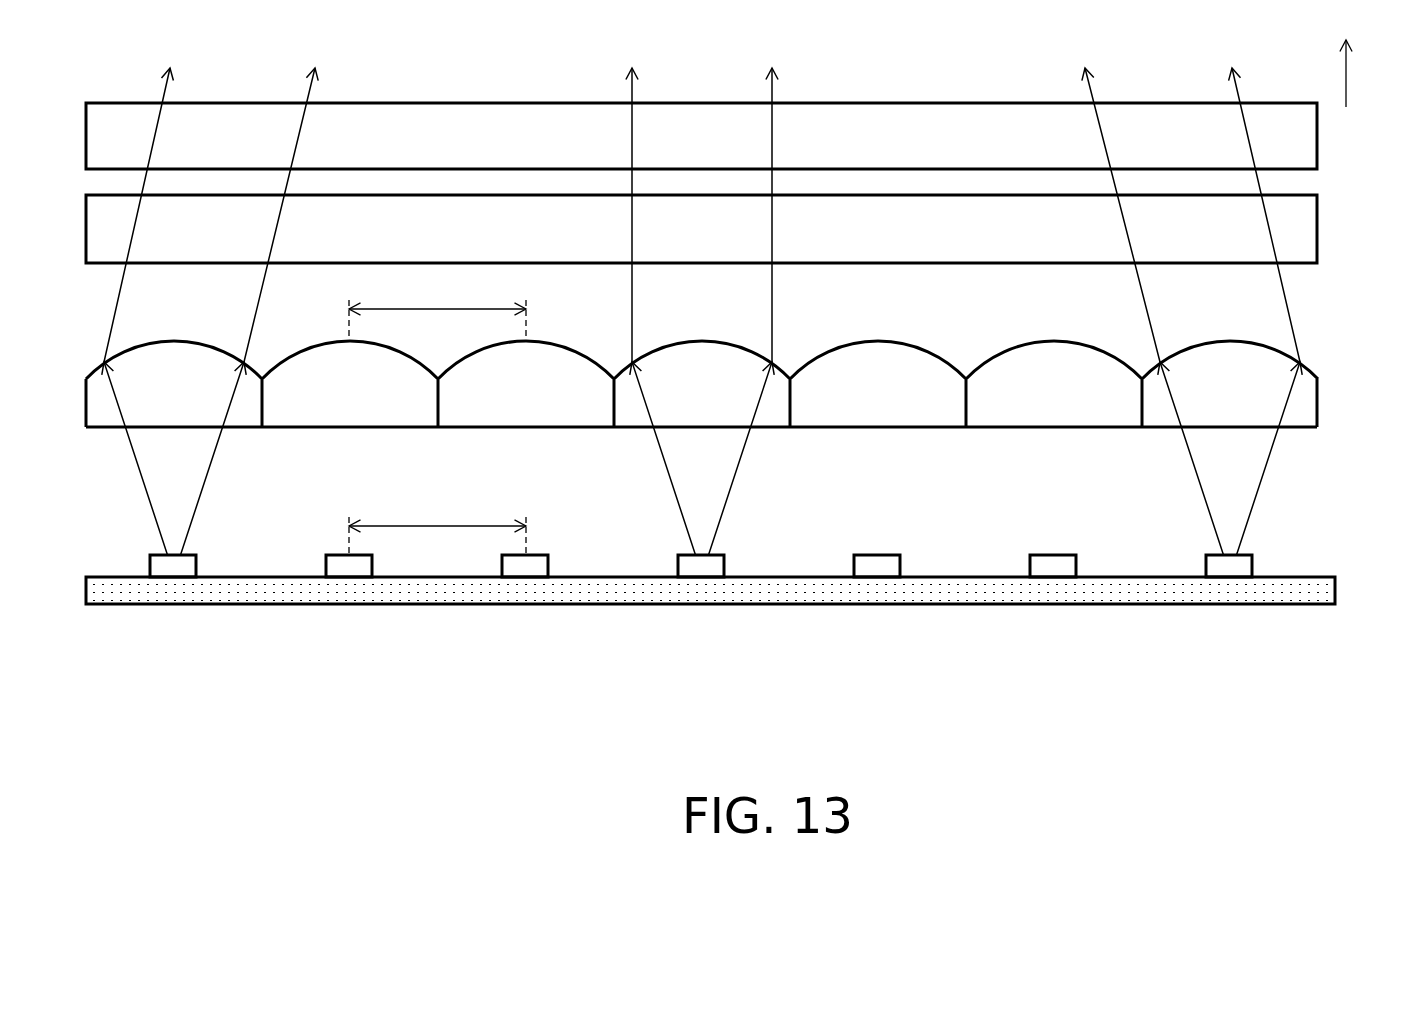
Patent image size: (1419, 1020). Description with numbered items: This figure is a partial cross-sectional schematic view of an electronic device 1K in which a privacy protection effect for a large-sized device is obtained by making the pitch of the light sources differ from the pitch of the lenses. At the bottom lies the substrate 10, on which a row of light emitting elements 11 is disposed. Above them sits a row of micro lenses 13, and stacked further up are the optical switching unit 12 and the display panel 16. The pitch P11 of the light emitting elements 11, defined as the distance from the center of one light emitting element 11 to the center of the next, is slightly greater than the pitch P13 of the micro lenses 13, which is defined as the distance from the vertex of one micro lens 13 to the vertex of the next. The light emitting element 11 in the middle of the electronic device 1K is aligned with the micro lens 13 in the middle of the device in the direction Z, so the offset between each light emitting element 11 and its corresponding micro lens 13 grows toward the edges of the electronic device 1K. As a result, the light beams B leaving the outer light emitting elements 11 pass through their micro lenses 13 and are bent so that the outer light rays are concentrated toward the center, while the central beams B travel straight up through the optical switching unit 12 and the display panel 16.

The display panel 16 is at (1305, 137).
The optical switching unit 12 is at (1305, 209).
The micro lenses 13 is at (1305, 405).
The substrate 10 is at (1315, 592).
The light emitting elements 11 is at (1227, 566).
The light beam B is at (1258, 493).
The pitch of the micro lenses P13 is at (437, 306).
The pitch of the light emitting elements P11 is at (437, 521).
The direction Z is at (1358, 73).
The electronic device 1K is at (1415, 751).